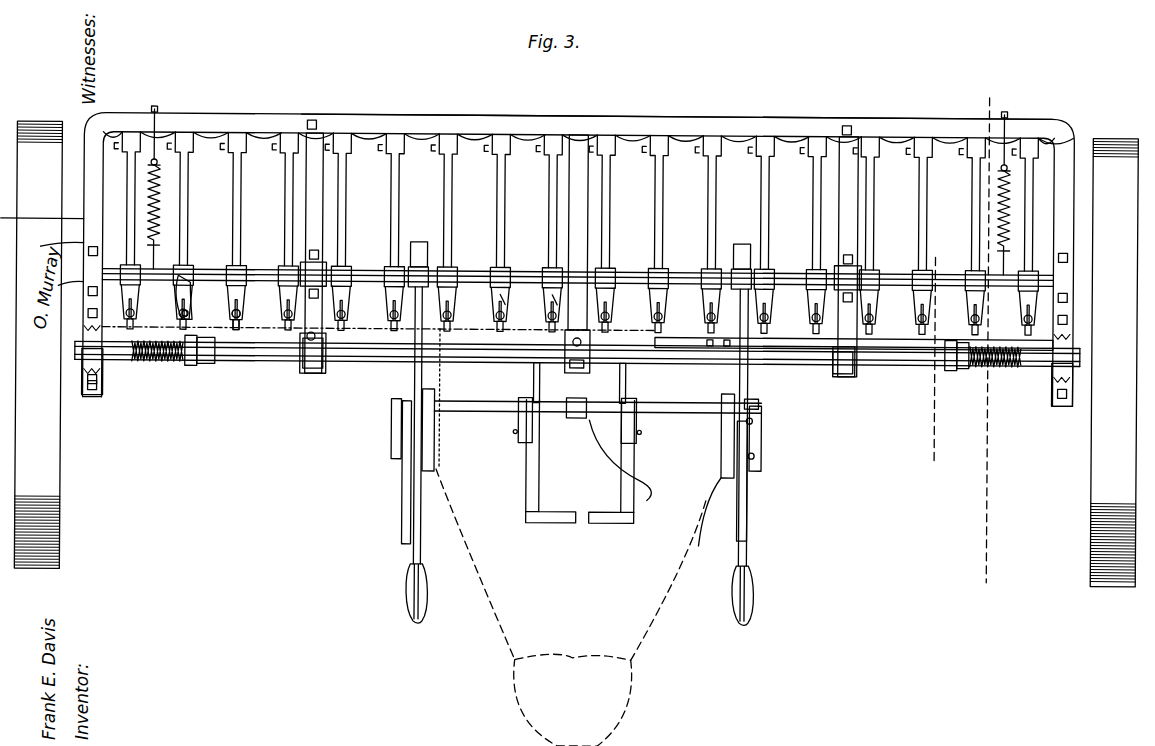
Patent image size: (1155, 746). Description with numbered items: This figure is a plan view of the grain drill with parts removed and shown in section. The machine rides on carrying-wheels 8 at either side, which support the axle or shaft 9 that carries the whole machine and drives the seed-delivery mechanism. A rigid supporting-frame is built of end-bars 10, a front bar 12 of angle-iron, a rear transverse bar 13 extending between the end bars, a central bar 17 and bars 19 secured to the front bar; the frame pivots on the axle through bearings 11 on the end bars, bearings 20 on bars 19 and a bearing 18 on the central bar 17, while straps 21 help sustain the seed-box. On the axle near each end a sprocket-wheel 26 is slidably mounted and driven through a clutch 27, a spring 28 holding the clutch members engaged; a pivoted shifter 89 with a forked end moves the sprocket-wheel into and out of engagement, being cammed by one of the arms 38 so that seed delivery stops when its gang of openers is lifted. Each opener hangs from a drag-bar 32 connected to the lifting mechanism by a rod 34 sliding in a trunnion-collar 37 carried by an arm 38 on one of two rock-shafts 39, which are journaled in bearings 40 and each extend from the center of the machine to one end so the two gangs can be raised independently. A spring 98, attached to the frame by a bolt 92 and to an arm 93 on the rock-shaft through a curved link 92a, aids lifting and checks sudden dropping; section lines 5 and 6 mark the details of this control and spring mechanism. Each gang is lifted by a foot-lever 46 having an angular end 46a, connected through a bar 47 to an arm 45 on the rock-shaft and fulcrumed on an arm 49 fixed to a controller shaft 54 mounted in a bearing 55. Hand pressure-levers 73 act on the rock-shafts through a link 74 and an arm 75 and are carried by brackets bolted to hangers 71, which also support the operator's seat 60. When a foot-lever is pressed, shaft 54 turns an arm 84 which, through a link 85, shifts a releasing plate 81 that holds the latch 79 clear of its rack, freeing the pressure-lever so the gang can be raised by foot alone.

The section line 5— 5 is at (934, 356).
The section line 6— 6 is at (990, 329).
The carrying-wheels 8 is at (1085, 541).
The axle or shaft 9 is at (902, 350).
The end-bars 10 is at (1068, 212).
The bearings 11 is at (83, 392).
The front bar 12 is at (790, 118).
The rear transverse bar 13 is at (118, 370).
The central bar 17 is at (580, 135).
The bearing 18 is at (592, 360).
The bars 19 is at (316, 142).
The bearings 20 is at (325, 378).
The straps 21 is at (303, 375).
The sprocket-wheel 26 is at (190, 372).
The clutch 27 is at (212, 370).
The spring 28 is at (166, 375).
The drag-bar 32 is at (241, 214).
The rod 34 is at (241, 310).
The trunnion-collar 37 is at (241, 324).
The arm 38 is at (185, 268).
The rock-shaft 39 is at (356, 268).
The bearings 40 is at (285, 266).
The arm 45 is at (510, 266).
The foot-lever 46 is at (540, 478).
The angular end 46a is at (590, 526).
The connector or bar 47 is at (533, 380).
The arm 49 is at (518, 436).
The shaft 54 is at (467, 416).
The bearing 55 is at (648, 500).
The seat 60 is at (570, 537).
The hangers 71 is at (436, 392).
The pressure-lever 73 is at (423, 544).
The link 74 is at (395, 364).
The arm 75 is at (422, 243).
The latch 79 is at (758, 505).
The releasing plate 81 is at (405, 460).
The arm 84 is at (760, 408).
The link 85 is at (762, 458).
The shifter 89 is at (190, 312).
The bolt 92 is at (163, 133).
The curved link 92a is at (54, 278).
The arm 93 is at (42, 235).
The spring 98 is at (160, 207).